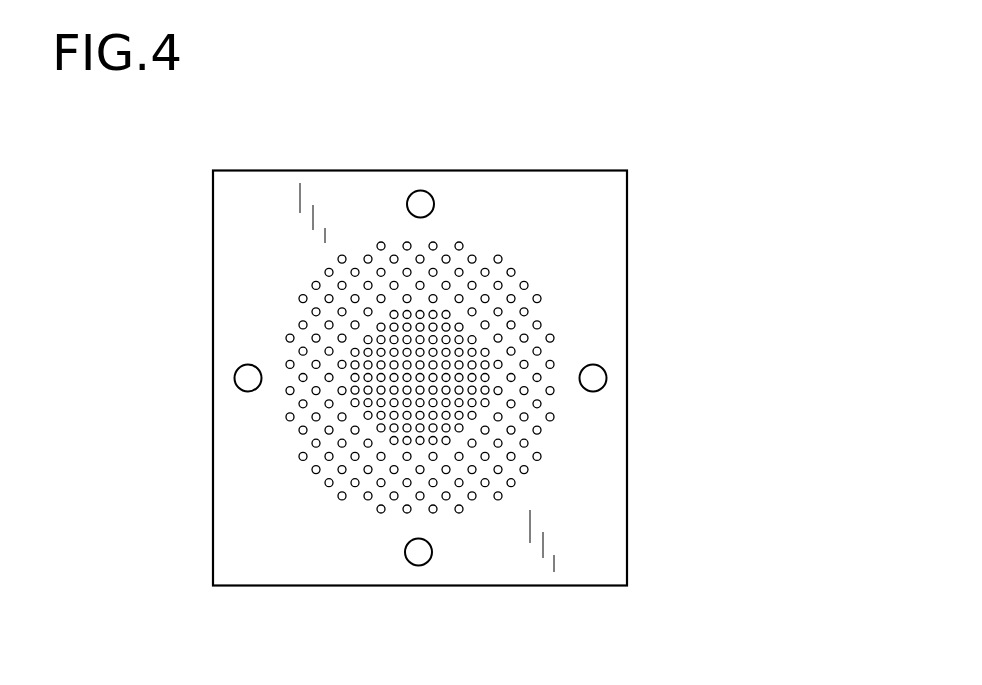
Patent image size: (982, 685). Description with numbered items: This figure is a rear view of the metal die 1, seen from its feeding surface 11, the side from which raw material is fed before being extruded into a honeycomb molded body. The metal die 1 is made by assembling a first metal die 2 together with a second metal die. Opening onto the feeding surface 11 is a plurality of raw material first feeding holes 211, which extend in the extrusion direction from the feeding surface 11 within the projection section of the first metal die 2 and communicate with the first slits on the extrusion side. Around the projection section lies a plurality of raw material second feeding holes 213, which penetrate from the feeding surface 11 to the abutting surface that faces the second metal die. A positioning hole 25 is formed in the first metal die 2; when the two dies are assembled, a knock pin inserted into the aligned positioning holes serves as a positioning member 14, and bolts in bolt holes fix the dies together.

The metal die 1 is at (590, 154).
The first metal die 2 is at (577, 557).
The feeding surface 11 is at (238, 302).
The positioning member 14 is at (420, 556).
The positioning hole 25 is at (423, 190).
The raw material first feeding holes 211 is at (395, 327).
The raw material second feeding holes 213 is at (382, 298).